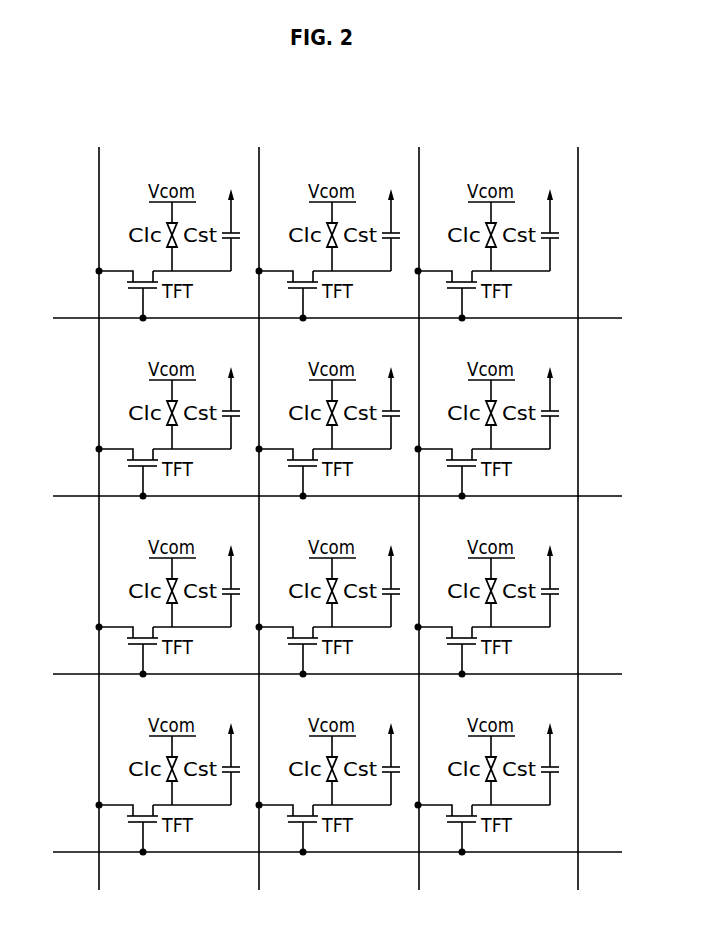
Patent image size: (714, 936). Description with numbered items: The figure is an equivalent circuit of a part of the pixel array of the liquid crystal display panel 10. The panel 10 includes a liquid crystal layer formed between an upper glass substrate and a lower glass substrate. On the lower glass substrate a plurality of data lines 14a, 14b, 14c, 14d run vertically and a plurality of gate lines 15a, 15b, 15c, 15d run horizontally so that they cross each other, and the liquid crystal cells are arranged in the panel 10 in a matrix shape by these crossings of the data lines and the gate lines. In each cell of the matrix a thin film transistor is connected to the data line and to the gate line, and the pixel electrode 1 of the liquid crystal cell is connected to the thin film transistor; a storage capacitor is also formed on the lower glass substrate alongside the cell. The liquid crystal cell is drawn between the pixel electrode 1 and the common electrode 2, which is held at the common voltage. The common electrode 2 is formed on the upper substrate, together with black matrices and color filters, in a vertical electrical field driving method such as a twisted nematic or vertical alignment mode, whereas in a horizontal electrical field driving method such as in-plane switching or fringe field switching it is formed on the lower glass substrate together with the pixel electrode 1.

The liquid crystal display panel 10 is at (67, 103).
The data line 14a is at (100, 507).
The data line 14b is at (259, 507).
The data line 14c is at (419, 507).
The data line 14d is at (578, 507).
The gate line 15a is at (319, 318).
The gate line 15b is at (319, 496).
The gate line 15c is at (319, 674).
The gate line 15d is at (319, 852).
The pixel electrode 1 is at (193, 253).
The common electrode 2 is at (189, 212).